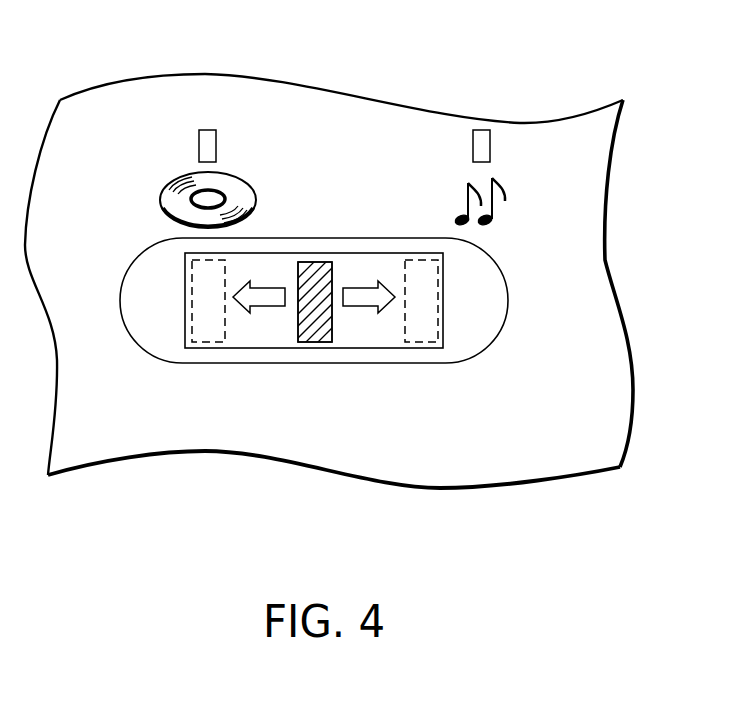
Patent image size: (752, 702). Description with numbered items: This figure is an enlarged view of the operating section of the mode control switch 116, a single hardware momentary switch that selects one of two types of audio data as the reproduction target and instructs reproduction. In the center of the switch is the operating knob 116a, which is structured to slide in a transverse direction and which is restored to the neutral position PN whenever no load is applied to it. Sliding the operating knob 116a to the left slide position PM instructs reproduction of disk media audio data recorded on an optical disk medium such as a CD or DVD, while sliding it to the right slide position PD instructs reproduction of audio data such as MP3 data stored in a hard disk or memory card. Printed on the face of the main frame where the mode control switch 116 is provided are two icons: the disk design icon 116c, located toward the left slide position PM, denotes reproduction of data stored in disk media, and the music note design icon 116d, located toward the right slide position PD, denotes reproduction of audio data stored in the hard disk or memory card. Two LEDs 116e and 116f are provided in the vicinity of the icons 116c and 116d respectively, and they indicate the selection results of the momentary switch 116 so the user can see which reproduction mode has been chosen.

The mode control switch 116 is at (392, 253).
The operating knob 116a is at (310, 262).
The disk design icon 116c is at (161, 200).
The music note design icon 116d is at (502, 212).
The LED 116e is at (217, 145).
The LED 116f is at (491, 146).
The slide position PM is at (203, 390).
The neutral position PN is at (315, 390).
The slide position PD is at (426, 390).